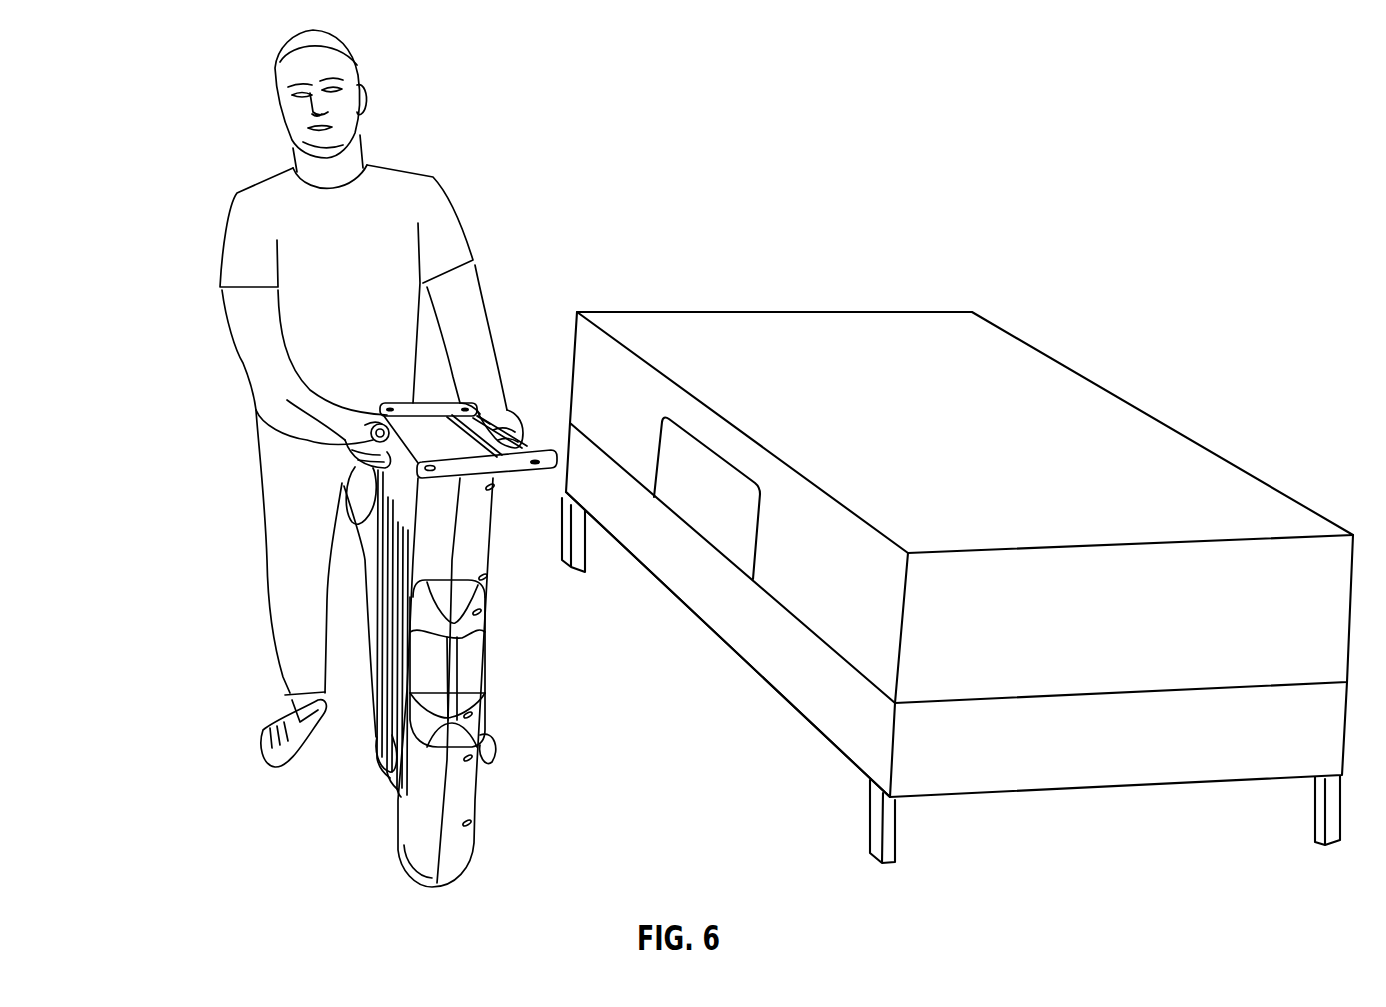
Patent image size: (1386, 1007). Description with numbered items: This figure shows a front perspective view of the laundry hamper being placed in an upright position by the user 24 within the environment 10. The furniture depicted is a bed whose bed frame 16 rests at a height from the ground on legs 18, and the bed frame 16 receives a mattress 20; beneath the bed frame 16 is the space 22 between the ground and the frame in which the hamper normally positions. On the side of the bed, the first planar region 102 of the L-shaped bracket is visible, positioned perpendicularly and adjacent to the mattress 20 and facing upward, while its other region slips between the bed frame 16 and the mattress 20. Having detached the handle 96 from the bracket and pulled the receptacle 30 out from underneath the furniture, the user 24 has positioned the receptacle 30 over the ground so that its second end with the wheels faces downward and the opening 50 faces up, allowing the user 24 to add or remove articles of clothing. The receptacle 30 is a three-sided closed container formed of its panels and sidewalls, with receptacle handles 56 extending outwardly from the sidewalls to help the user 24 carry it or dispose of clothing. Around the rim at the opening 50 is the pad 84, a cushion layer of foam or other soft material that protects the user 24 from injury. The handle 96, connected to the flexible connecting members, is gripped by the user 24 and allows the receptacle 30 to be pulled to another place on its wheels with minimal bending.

The environment 10 is at (1220, 250).
The bed frame 16 is at (788, 668).
The legs 18 is at (890, 832).
The mattress 20 is at (788, 505).
The space 22 is at (800, 764).
The user 24 is at (374, 225).
The receptacle 30 is at (515, 598).
The opening 50 is at (443, 444).
The receptacle handles 56 is at (470, 660).
The pad 84 is at (525, 460).
The handle 96 is at (370, 436).
The first planar region 102 is at (708, 503).